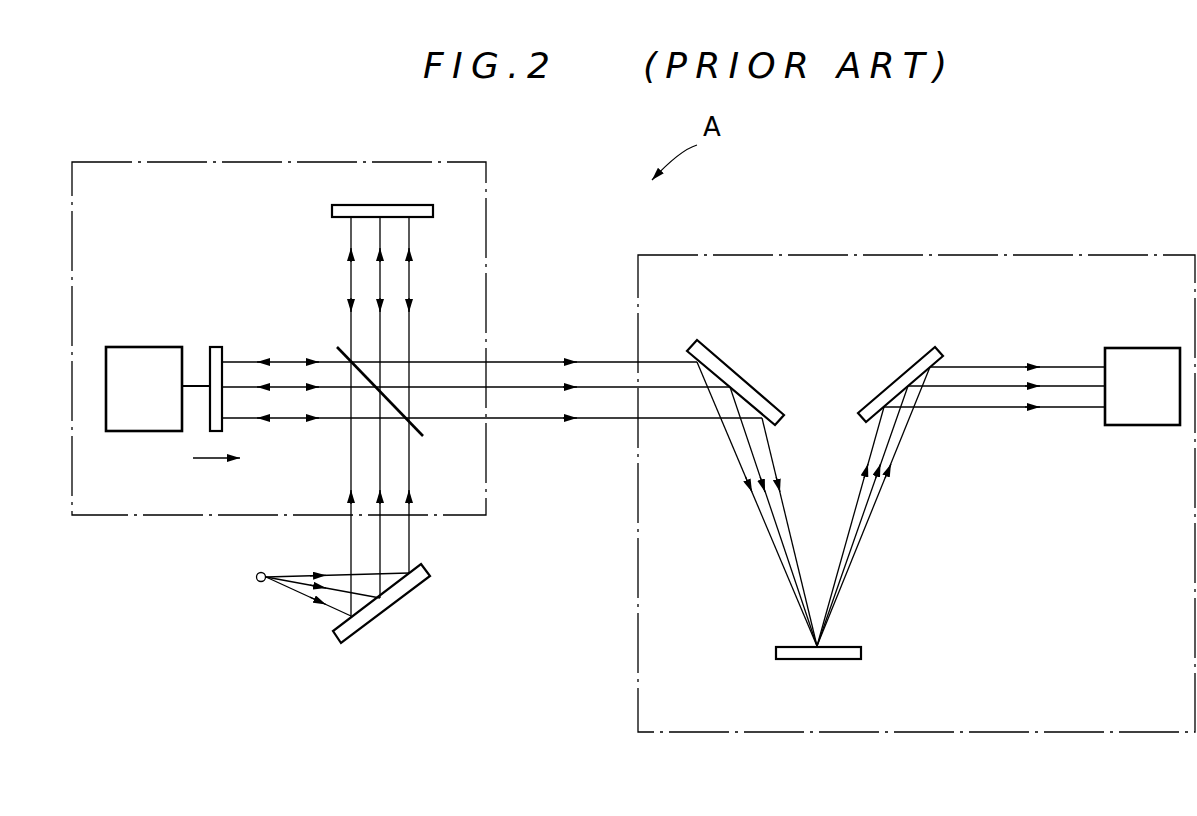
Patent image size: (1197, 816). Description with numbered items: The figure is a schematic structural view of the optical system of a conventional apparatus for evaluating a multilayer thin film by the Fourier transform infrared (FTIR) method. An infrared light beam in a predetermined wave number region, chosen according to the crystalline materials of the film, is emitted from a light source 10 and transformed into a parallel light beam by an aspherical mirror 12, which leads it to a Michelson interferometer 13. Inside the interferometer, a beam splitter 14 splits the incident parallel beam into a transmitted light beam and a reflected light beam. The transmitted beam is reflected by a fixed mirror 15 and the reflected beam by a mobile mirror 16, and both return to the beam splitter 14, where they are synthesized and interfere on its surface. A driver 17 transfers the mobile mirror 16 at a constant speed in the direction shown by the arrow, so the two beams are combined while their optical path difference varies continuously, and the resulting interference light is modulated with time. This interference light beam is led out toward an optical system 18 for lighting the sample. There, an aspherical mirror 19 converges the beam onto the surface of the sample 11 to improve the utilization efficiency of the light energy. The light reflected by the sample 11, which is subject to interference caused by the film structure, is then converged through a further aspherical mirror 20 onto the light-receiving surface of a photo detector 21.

The light source 10 is at (257, 581).
The sample 11 is at (796, 661).
The aspherical mirror 12 is at (440, 595).
The Michelson interferometer 13 is at (279, 161).
The beam splitter 14 is at (423, 436).
The fixed mirror 15 is at (353, 207).
The mobile mirror 16 is at (218, 347).
The driver 17 is at (128, 347).
The optical system 18 is at (933, 256).
The aspherical mirror 19 is at (726, 364).
The aspherical mirror 20 is at (890, 385).
The photo detector 21 is at (1108, 348).